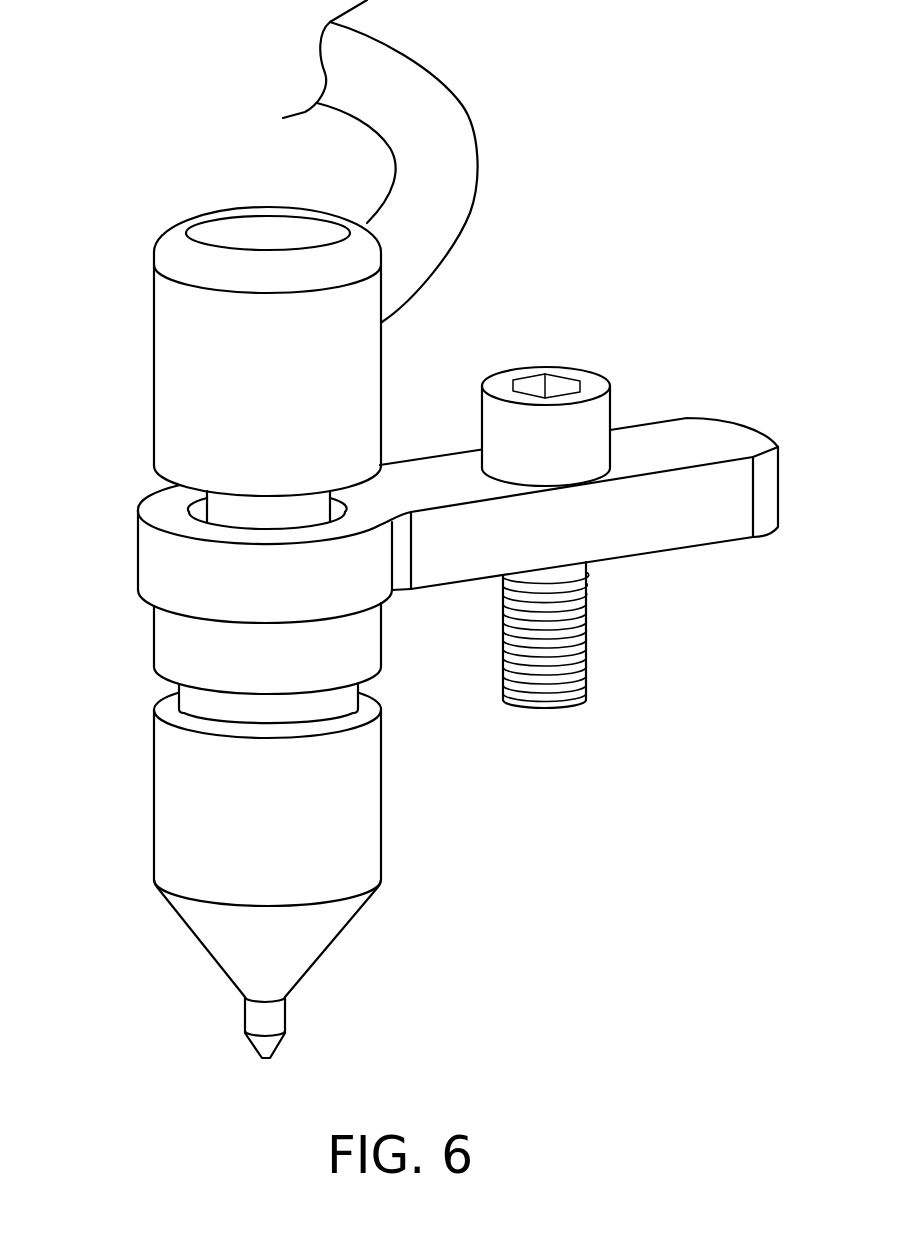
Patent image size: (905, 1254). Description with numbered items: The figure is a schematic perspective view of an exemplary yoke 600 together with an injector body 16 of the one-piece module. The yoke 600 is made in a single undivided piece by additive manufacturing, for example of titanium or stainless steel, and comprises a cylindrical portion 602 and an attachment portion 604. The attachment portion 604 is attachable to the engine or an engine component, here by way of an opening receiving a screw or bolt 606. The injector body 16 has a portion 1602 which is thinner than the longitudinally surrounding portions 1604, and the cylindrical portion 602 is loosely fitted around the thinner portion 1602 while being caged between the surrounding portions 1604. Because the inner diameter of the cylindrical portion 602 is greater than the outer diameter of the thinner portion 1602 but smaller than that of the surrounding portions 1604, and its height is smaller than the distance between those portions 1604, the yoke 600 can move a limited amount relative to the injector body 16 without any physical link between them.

The injector body 16 is at (455, 827).
The yoke 600 is at (768, 385).
The cylindrical portion 602 is at (192, 574).
The attachment portion 604 is at (648, 447).
The screw or bolt 606 is at (550, 622).
The thinner portion 1602 is at (233, 511).
The surrounding portions 1604 is at (217, 390).